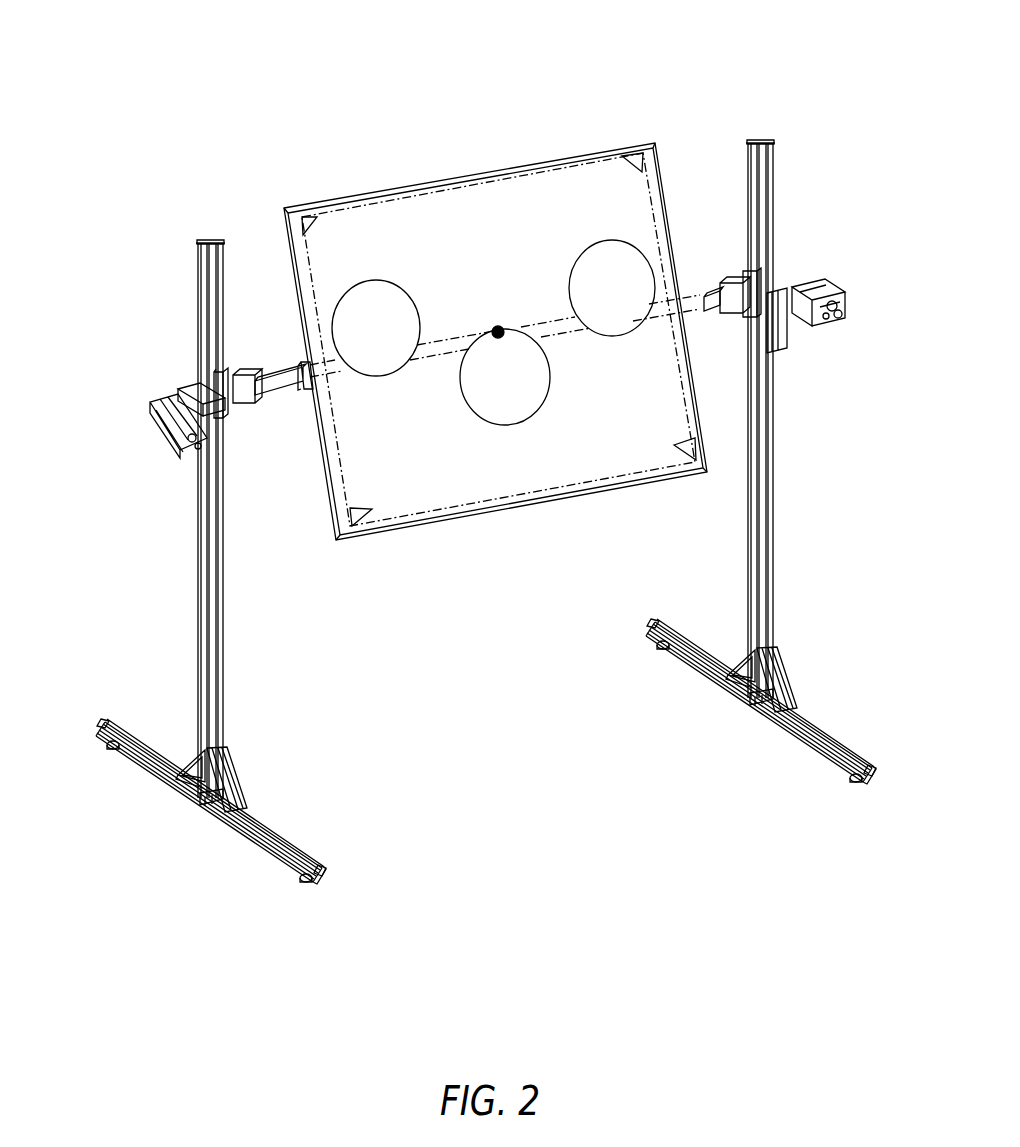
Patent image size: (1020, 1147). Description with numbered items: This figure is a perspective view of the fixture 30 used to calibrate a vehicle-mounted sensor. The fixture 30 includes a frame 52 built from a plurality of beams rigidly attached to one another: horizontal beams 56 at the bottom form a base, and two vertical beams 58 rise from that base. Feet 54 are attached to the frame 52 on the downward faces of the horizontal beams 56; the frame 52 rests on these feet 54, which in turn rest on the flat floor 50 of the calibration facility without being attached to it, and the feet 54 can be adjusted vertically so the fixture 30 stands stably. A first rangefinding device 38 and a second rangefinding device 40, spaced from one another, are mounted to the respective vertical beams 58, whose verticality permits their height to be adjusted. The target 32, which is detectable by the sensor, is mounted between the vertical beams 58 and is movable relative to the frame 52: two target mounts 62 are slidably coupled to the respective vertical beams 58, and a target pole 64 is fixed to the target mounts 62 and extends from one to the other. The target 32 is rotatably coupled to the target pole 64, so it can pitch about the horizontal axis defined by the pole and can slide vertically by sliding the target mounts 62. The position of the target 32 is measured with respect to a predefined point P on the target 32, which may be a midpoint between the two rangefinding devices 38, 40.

The fixture 30 is at (600, 52).
The target 32 is at (430, 181).
The predefined point P is at (498, 327).
The first rangefinding device 38 is at (188, 390).
The second rangefinding device 40 is at (806, 286).
The floor 50 is at (557, 827).
The frame 52 is at (566, 384).
The feet 54 is at (112, 750).
The horizontal beams 56 is at (273, 822).
The vertical beams 58 is at (224, 620).
The target mounts 62 is at (726, 280).
The target pole 64 is at (272, 364).